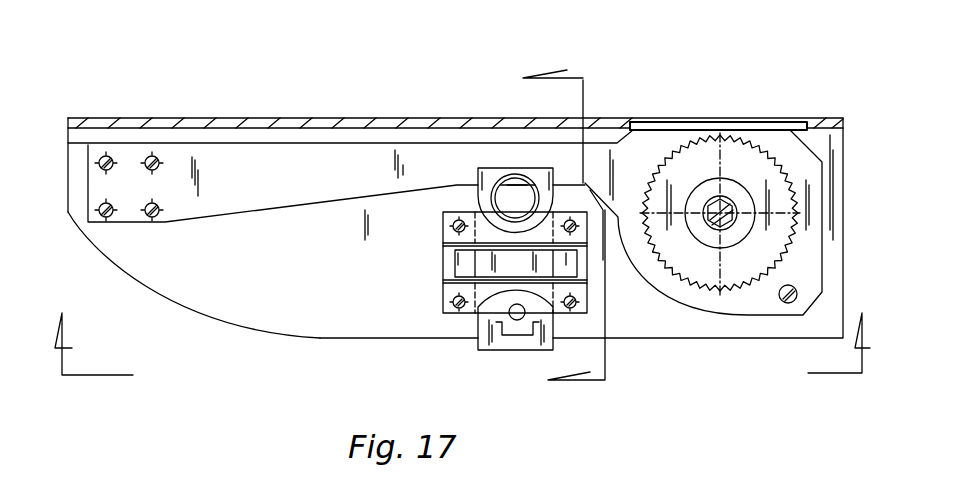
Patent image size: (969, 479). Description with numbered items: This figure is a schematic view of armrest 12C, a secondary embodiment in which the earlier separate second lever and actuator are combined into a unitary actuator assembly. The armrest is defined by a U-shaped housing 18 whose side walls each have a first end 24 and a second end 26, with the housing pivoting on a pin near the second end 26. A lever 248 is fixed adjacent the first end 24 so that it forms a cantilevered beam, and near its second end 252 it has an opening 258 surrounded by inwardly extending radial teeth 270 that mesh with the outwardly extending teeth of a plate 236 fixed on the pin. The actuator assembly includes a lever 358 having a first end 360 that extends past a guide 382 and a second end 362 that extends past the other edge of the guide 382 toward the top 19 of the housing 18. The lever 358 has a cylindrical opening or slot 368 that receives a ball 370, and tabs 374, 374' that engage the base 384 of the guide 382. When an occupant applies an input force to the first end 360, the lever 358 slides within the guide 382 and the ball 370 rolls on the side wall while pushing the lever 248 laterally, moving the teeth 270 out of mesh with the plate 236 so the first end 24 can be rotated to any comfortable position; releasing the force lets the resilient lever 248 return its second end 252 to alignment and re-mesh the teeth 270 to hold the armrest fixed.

The armrest 12C is at (130, 80).
The U-shaped housing 18 is at (788, 28).
The top of the U-shaped housing 19 is at (343, 95).
The first end 24 is at (68, 154).
The second end 26 is at (846, 233).
The plate 236 is at (722, 155).
The lever 248 is at (240, 163).
The second end 252 is at (826, 176).
The opening 258 is at (715, 150).
The inwardly extending radial teeth 270 is at (700, 150).
The lever 358 is at (497, 175).
The first end 360 is at (518, 348).
The second end 362 is at (545, 178).
The cylindrical opening or slot 368 is at (548, 188).
The ball 370 is at (478, 185).
The tab 374 is at (442, 302).
The tab 374' is at (560, 331).
The guide 382 is at (452, 310).
The base 384 is at (469, 313).